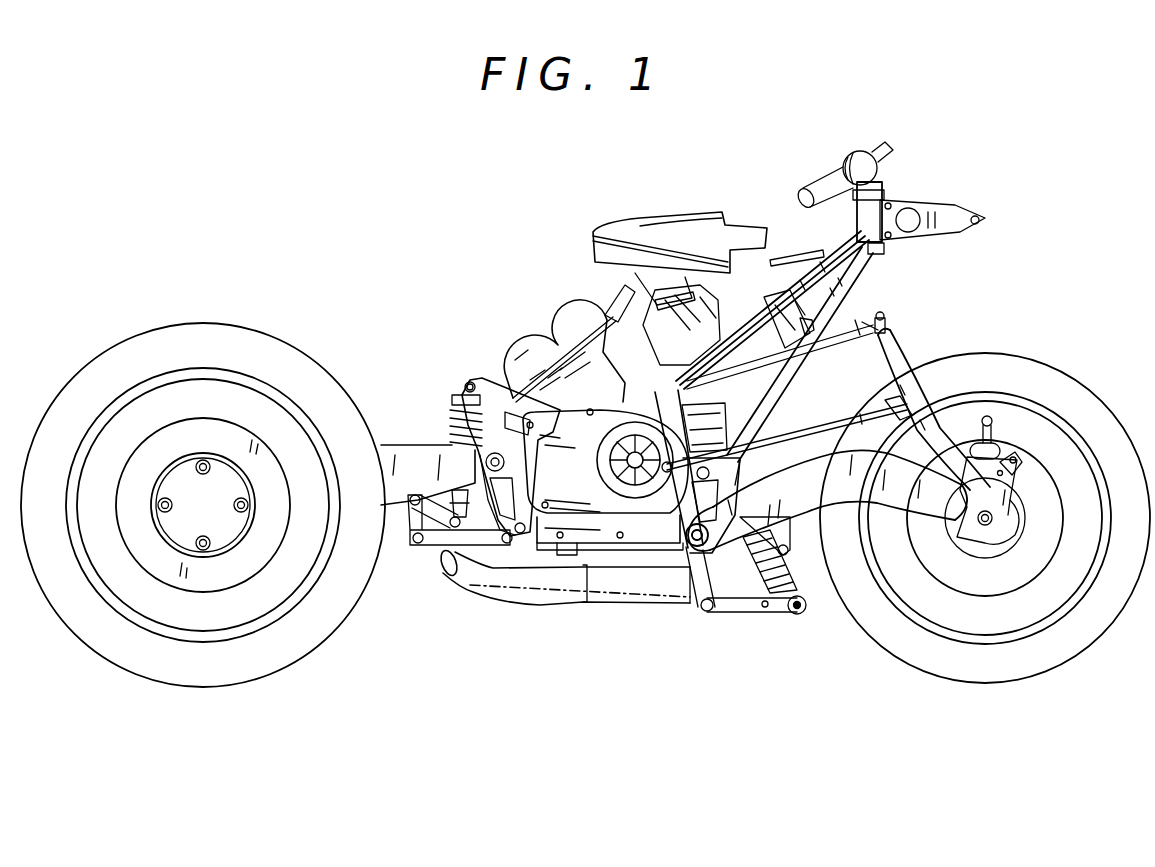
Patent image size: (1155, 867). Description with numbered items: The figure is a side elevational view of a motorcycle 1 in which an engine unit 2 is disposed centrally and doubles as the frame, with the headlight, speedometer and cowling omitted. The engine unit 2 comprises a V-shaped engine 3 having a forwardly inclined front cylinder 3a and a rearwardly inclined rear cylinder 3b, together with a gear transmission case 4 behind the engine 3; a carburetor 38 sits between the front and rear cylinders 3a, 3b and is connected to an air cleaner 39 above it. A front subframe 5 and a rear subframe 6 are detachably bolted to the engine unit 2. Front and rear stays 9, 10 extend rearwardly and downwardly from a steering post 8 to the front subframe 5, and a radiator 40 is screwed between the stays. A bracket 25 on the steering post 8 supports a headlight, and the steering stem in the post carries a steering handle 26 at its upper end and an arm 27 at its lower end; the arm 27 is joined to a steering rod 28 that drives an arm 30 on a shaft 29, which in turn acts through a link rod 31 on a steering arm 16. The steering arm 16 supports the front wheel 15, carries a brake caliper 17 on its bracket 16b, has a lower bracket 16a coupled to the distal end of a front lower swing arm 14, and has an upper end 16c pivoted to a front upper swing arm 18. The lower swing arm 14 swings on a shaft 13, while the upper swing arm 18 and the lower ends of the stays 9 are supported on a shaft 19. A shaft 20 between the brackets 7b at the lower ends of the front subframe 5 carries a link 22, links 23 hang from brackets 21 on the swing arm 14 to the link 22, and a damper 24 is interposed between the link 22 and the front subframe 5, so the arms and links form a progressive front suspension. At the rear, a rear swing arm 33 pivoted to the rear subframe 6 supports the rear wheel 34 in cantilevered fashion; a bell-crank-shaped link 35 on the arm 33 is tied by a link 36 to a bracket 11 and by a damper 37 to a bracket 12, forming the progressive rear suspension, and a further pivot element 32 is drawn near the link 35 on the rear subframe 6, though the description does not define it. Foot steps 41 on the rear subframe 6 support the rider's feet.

The motorcycle 1 is at (470, 240).
The engine unit 2 is at (660, 552).
The V-shaped engine 3 is at (580, 365).
The front cylinder 3a is at (745, 365).
The rear cylinder 3b is at (547, 382).
The gear transmission case 4 is at (553, 552).
The front subframe 5 is at (680, 548).
The rear subframe 6 is at (448, 582).
The bracket 7b is at (700, 606).
The steering post 8 is at (880, 212).
The front stays 9 is at (838, 225).
The rear stays 10 is at (845, 283).
The bracket 11 is at (498, 540).
The bracket 12 is at (483, 385).
The shaft 13 is at (690, 548).
The front lower swing arm 14 is at (868, 490).
The front wheel 15 is at (885, 628).
The steering arm 16 is at (940, 470).
The lower bracket 16a is at (983, 545).
The bracket 16b is at (1022, 462).
The upper end 16c is at (893, 340).
The brake caliper 17 is at (995, 445).
The front upper swing arm 18 is at (881, 315).
The shaft 19 is at (594, 232).
The shaft 20 is at (710, 612).
The brackets 21 is at (790, 555).
The link 22 is at (745, 612).
The links 23 is at (766, 610).
The damper 24 is at (797, 614).
The bracket 25 is at (988, 213).
The steering handle 26 is at (875, 148).
The arm 27 is at (885, 250).
The steering rod 28 is at (785, 255).
The shaft 29 is at (615, 300).
The arm 30 is at (605, 415).
The link rod 31 is at (815, 432).
The pivot bolt 32 is at (485, 458).
The rear swing arm 33 is at (395, 450).
The rear wheel 34 is at (172, 323).
The bell-crank-shaped link 35 is at (412, 540).
The link 36 is at (470, 540).
The damper 37 is at (455, 395).
The carburetor 38 is at (650, 262).
The air cleaner 39 is at (702, 222).
The radiator 40 is at (805, 346).
The foot steps 41 is at (468, 382).